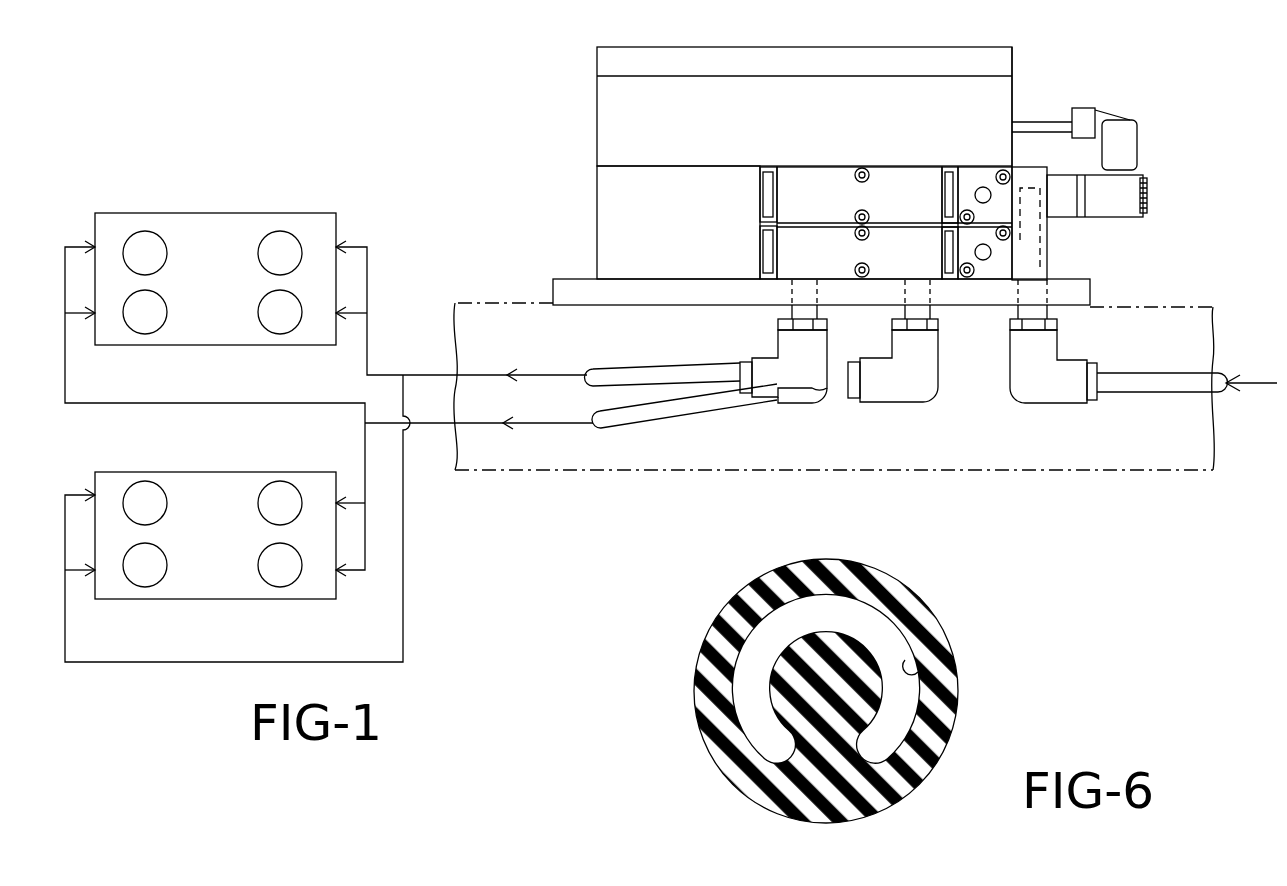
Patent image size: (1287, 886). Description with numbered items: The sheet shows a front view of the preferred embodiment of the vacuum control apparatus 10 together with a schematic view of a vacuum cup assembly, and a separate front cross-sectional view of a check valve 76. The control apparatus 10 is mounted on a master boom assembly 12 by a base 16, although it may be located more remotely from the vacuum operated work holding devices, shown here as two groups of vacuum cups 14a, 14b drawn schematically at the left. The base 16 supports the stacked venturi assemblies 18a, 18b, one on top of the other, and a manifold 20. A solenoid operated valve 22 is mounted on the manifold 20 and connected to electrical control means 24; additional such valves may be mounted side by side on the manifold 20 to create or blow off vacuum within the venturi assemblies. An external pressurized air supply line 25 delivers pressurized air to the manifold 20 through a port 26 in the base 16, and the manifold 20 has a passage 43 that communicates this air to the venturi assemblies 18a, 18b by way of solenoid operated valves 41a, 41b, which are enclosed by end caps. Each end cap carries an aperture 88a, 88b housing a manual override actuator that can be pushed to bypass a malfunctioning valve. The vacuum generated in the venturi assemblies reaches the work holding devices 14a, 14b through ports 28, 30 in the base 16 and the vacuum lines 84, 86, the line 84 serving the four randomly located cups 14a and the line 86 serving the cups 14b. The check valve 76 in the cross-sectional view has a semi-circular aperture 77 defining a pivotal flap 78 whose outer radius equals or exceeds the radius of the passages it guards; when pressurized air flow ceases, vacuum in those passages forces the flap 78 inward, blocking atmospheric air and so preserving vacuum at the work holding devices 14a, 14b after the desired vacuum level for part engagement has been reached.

In FIG. 1, the vacuum control apparatus 10 is at (575, 232).
In FIG. 1, the master boom assembly 12 is at (900, 478).
In FIG. 1, the vacuum cups 14a is at (143, 231).
In FIG. 1, the vacuum cups 14b is at (272, 231).
In FIG. 1, the base 16 is at (553, 288).
In FIG. 1, the venturi assembly 18a is at (760, 251).
In FIG. 1, the venturi assembly 18b is at (760, 197).
In FIG. 1, the manifold 20 is at (1047, 245).
In FIG. 1, the solenoid operated valve 22 is at (1148, 186).
In FIG. 1, the electrical control means 24 is at (908, 47).
In FIG. 1, the external pressurized air supply line 25 is at (1162, 393).
In FIG. 1, the port 26 is at (1036, 288).
In FIG. 1, the port 28 is at (930, 296).
In FIG. 1, the port 30 is at (790, 295).
In FIG. 1, the solenoid operated valve 41a is at (968, 243).
In FIG. 1, the solenoid operated valve 41b is at (958, 193).
In FIG. 1, the passage 43 is at (1047, 258).
In FIG. 6, the check valve 76 is at (943, 615).
In FIG. 6, the semi-circular aperture 77 is at (915, 668).
In FIG. 6, the pivotal flap 78 is at (790, 665).
In FIG. 1, the vacuum line 84 is at (662, 425).
In FIG. 1, the vacuum line 86 is at (617, 368).
In FIG. 1, the aperture 88a is at (983, 260).
In FIG. 1, the aperture 88b is at (983, 187).